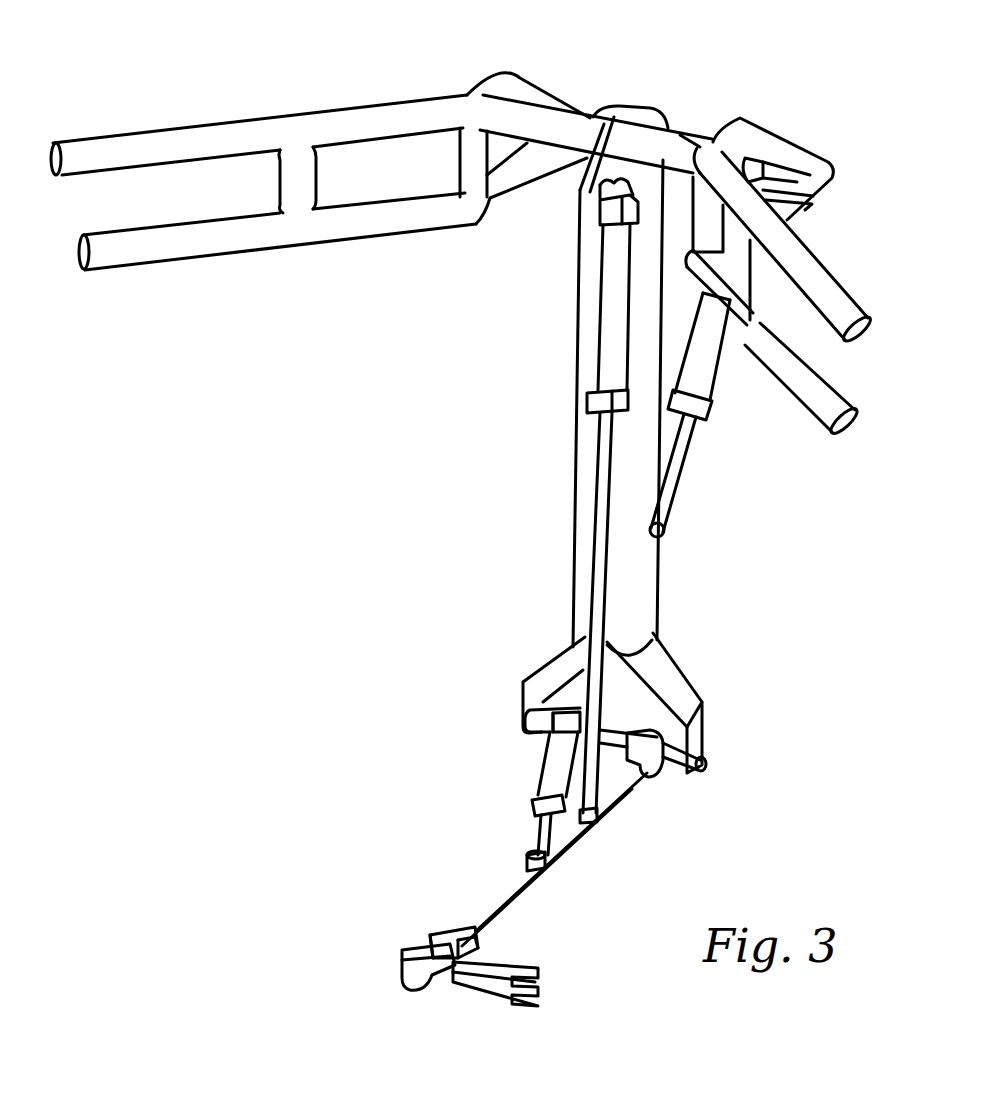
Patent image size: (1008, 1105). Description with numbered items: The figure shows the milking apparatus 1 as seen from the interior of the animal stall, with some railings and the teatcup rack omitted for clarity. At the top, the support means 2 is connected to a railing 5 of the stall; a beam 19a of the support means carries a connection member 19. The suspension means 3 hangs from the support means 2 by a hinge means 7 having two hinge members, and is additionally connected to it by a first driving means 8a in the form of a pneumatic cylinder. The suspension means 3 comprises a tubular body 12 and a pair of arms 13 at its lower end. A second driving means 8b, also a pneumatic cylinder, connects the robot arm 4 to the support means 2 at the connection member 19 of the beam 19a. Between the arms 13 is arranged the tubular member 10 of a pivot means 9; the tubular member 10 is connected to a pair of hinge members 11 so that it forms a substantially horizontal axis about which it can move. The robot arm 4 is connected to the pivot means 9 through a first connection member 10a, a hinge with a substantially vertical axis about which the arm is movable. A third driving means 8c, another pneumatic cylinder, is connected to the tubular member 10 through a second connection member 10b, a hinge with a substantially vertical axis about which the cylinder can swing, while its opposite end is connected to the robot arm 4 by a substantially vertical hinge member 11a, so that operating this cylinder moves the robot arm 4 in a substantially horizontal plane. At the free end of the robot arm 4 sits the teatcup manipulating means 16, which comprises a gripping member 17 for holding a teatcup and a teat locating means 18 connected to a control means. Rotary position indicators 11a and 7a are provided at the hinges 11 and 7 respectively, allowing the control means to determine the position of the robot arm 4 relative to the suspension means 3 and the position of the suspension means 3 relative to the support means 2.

The apparatus 1 is at (505, 557).
The support means 2 is at (757, 123).
The suspension means 3 is at (707, 590).
The robot arm 4 is at (513, 907).
The railing 5 is at (177, 148).
The hinge means 7 is at (770, 160).
The rotary position indicator 7a is at (813, 203).
The first driving means 8a is at (715, 367).
The second driving means 8b is at (603, 333).
The third driving means 8c is at (537, 782).
The pivot means 9 is at (530, 745).
The tubular member 10 is at (613, 750).
The first connection member 10a is at (673, 773).
The second connection member 10b is at (550, 712).
The hinge members 11 is at (710, 761).
The hinge member / rotary position indicator 11a is at (550, 863).
The tubular body 12 is at (587, 490).
The arms 13 is at (547, 667).
The manipulating means 16 is at (427, 1000).
The gripping member 17 is at (507, 1007).
The teat locating means 18 is at (430, 937).
The connection member 19 is at (573, 203).
The beam 19a is at (545, 112).